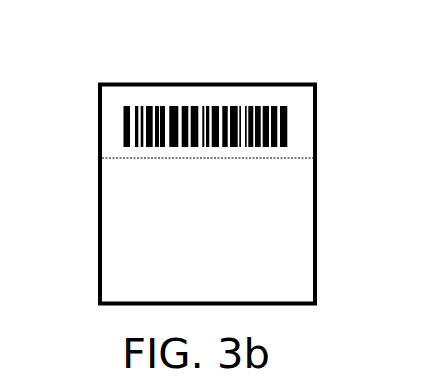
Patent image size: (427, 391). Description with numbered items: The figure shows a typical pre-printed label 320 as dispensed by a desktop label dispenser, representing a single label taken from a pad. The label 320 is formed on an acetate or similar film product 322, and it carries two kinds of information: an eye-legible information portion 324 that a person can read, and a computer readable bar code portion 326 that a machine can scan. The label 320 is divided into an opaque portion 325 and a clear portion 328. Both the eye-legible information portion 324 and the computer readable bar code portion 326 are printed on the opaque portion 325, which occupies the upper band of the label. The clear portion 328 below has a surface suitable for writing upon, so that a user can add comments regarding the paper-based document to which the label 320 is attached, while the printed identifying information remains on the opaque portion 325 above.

The pre-printed label 320 is at (211, 66).
The acetate film product 322 is at (222, 83).
The eye-legible information portion 324 is at (302, 83).
The opaque portion 325 is at (115, 136).
The computer readable bar code portion 326 is at (290, 130).
The clear portion 328 is at (316, 252).